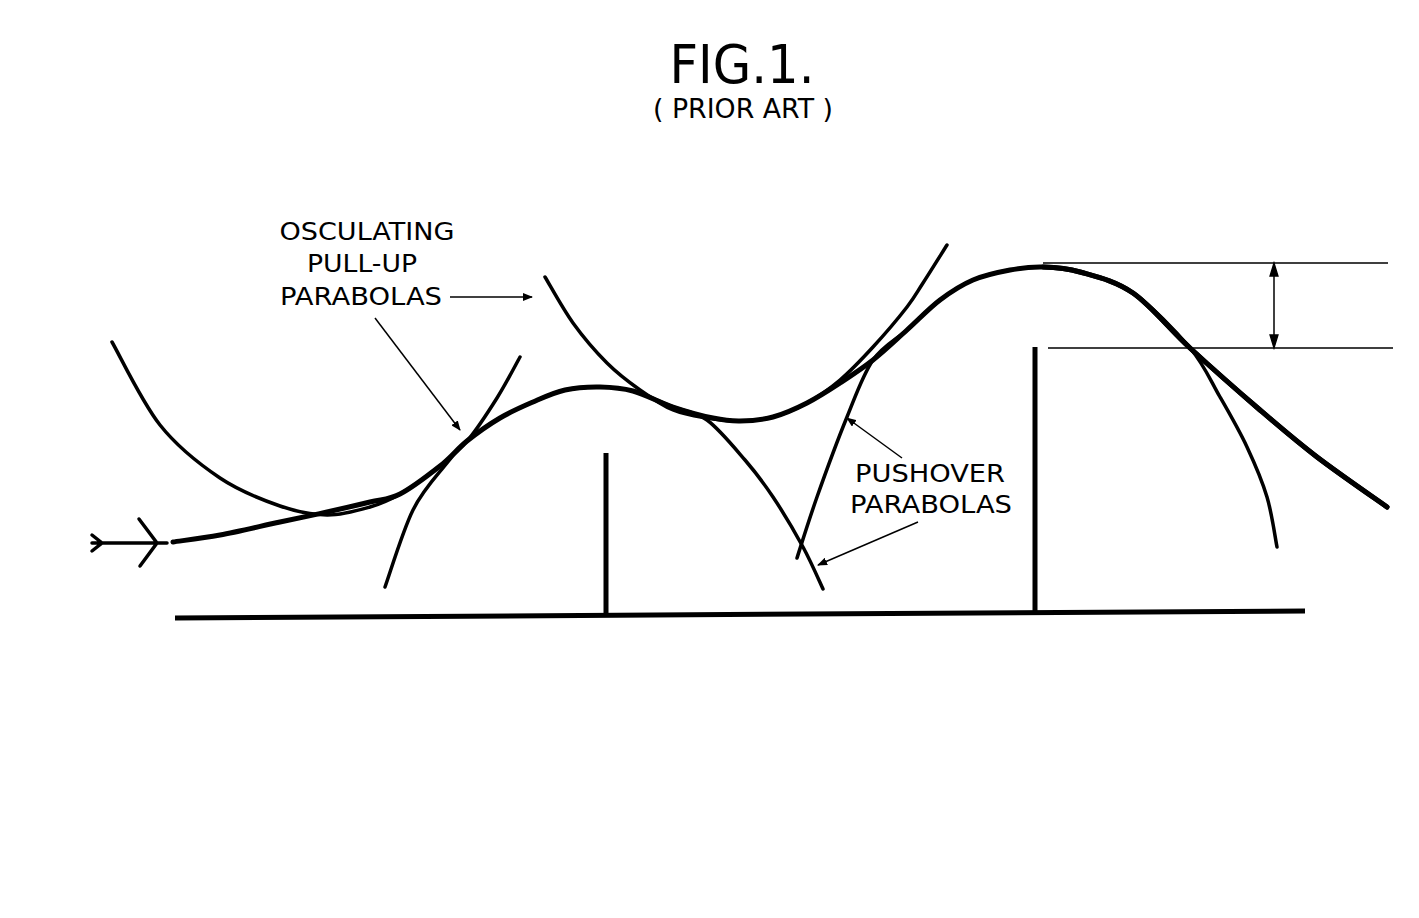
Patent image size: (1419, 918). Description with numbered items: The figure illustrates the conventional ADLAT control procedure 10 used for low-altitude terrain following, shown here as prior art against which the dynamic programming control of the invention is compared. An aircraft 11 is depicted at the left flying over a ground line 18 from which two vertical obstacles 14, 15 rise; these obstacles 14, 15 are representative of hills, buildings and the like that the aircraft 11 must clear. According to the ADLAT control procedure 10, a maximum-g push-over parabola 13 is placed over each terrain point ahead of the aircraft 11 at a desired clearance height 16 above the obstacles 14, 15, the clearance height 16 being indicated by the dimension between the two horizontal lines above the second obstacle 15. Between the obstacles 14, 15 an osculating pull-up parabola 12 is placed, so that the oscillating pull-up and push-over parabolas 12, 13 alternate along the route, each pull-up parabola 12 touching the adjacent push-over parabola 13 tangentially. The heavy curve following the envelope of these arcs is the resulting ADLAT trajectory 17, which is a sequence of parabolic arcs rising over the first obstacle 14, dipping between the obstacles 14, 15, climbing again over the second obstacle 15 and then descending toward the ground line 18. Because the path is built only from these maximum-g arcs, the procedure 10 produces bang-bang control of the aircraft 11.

The ADLAT control procedure 10 is at (232, 312).
The aircraft 11 is at (127, 542).
The osculating pull-up parabola 12 is at (497, 397).
The push-over parabola 13 is at (725, 442).
The obstacle 14 is at (603, 535).
The obstacle 15 is at (1038, 508).
The clearance height 16 is at (1276, 310).
The ADLAT trajectory 17 is at (1258, 410).
The ground line 18 is at (1088, 610).